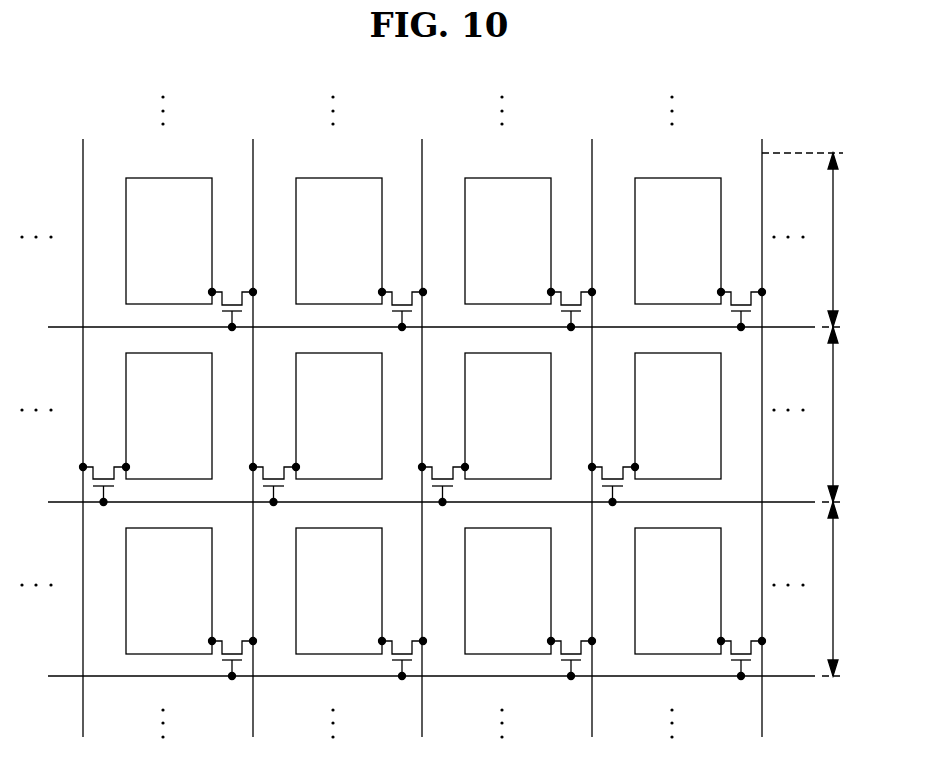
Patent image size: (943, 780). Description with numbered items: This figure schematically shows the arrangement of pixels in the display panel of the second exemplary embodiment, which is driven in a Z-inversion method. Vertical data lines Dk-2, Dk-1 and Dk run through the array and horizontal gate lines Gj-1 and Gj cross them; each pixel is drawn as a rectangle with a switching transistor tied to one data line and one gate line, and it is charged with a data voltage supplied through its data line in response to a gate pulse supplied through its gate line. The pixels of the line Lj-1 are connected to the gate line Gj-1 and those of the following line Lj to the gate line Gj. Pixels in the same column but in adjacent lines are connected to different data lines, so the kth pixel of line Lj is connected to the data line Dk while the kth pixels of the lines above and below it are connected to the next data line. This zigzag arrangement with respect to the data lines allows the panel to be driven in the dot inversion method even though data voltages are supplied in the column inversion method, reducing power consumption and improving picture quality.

The data line D(k-2) Dk-2 is at (82, 427).
The data line D(k-1) Dk-1 is at (252, 427).
The kth data line Dk is at (422, 427).
The (j−1)th gate line Gj-1 is at (414, 326).
The jth gate line Gj is at (414, 501).
The pixel row length L(j-1) Lj-1 is at (845, 240).
The pixel row length L(j) Lj is at (839, 414).